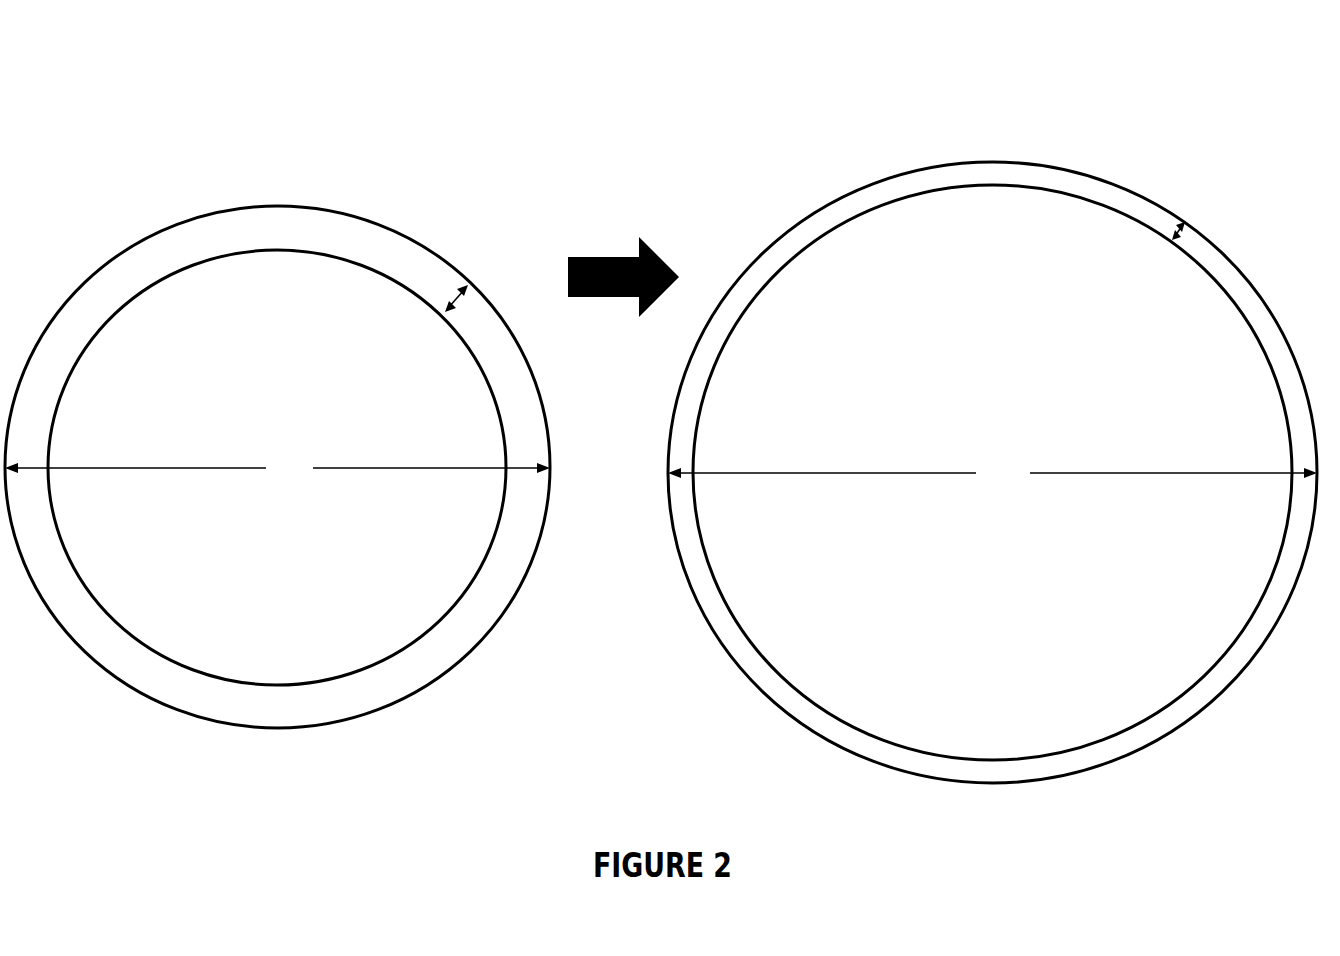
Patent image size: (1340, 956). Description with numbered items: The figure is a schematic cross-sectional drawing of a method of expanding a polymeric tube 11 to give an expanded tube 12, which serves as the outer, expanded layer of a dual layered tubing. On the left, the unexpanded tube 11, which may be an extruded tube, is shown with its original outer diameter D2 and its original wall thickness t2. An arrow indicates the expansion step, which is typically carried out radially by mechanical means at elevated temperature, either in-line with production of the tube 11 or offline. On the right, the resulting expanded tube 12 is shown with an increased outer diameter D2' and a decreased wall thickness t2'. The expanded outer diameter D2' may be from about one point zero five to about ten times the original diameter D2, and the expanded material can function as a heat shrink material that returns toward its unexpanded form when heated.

The polymeric tube 11 is at (353, 215).
The expanded tube 12 is at (1016, 173).
The outer diameter of tube D2 is at (277, 470).
The wall thickness of tube t2 is at (498, 308).
The outer diameter of expanded layer D2' is at (992, 474).
The wall thickness of expanded layer t2' is at (1230, 231).